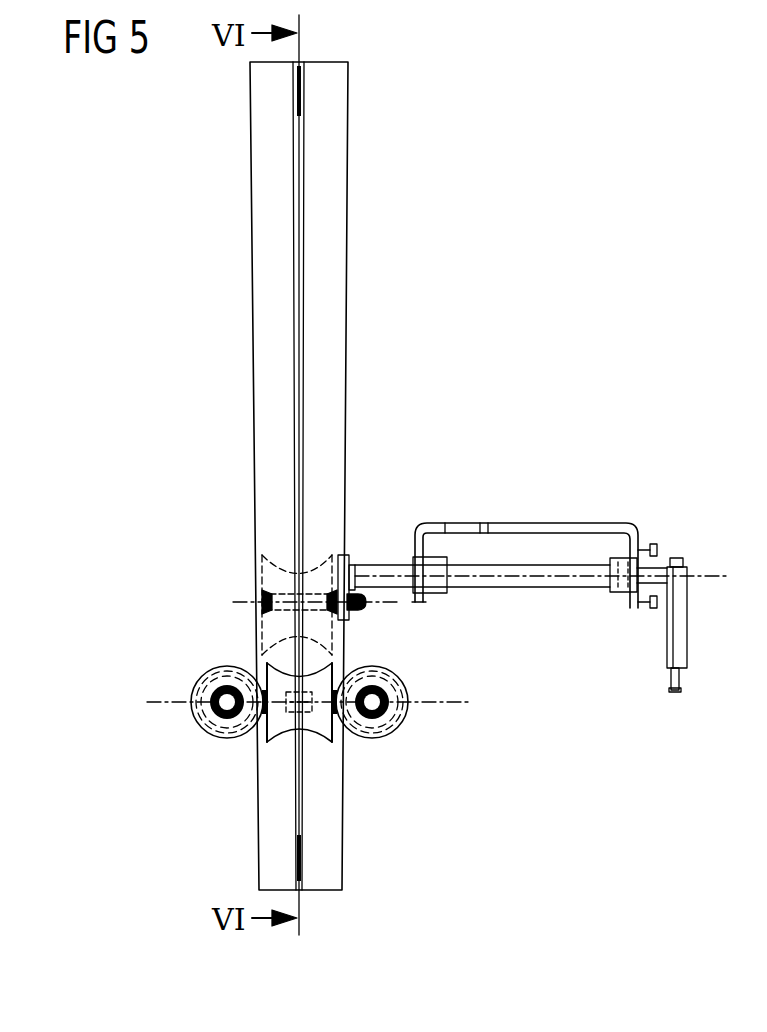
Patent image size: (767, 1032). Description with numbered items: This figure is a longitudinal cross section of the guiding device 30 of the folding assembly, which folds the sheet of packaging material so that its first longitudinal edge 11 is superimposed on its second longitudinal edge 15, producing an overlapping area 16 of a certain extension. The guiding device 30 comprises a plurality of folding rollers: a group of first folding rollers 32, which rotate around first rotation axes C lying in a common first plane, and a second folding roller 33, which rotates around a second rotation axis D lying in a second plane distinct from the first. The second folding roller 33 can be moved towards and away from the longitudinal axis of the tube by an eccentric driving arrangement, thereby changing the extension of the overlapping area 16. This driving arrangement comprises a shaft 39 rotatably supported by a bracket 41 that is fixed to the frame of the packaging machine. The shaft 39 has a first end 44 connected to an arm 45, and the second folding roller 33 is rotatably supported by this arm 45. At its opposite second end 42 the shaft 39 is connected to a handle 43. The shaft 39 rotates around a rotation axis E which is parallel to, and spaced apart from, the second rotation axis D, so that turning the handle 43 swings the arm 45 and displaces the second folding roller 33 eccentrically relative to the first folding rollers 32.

The first longitudinal edge 11 is at (292, 157).
The second longitudinal edge 15 is at (305, 131).
The overlapping area 16 is at (330, 823).
The guiding device 30 is at (427, 445).
The first folding rollers 32 is at (205, 683).
The second folding roller 33 is at (298, 575).
The shaft 39 is at (587, 584).
The bracket 41 is at (528, 528).
The second end 42 is at (656, 500).
The handle 43 is at (688, 618).
The first end 44 is at (368, 540).
The arm 45 is at (348, 615).
The first rotation axes C is at (241, 722).
The second rotation axis D is at (380, 603).
The rotation axis E is at (712, 573).